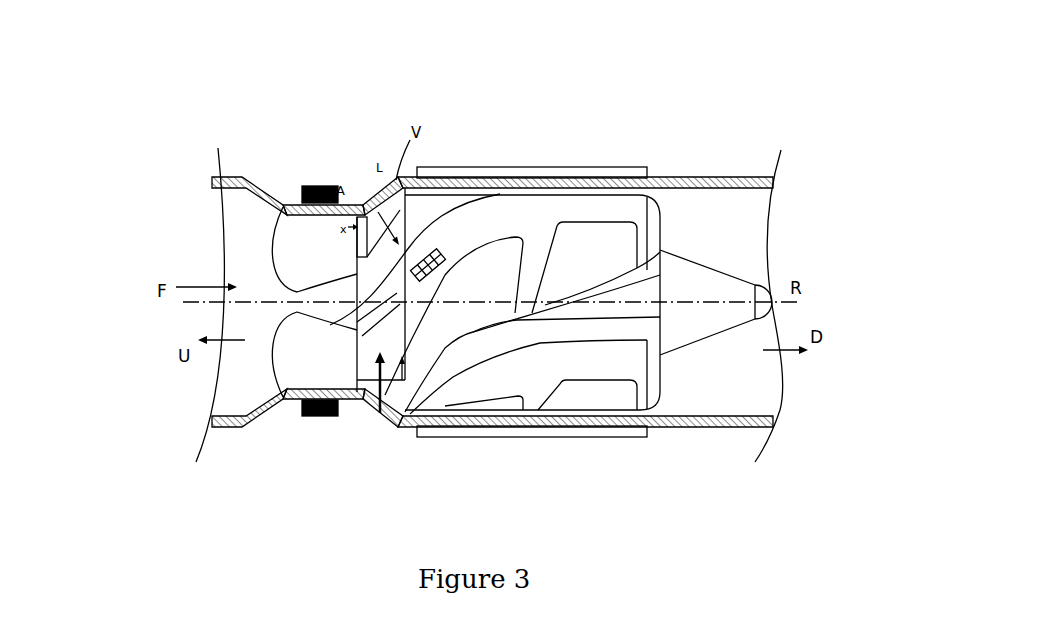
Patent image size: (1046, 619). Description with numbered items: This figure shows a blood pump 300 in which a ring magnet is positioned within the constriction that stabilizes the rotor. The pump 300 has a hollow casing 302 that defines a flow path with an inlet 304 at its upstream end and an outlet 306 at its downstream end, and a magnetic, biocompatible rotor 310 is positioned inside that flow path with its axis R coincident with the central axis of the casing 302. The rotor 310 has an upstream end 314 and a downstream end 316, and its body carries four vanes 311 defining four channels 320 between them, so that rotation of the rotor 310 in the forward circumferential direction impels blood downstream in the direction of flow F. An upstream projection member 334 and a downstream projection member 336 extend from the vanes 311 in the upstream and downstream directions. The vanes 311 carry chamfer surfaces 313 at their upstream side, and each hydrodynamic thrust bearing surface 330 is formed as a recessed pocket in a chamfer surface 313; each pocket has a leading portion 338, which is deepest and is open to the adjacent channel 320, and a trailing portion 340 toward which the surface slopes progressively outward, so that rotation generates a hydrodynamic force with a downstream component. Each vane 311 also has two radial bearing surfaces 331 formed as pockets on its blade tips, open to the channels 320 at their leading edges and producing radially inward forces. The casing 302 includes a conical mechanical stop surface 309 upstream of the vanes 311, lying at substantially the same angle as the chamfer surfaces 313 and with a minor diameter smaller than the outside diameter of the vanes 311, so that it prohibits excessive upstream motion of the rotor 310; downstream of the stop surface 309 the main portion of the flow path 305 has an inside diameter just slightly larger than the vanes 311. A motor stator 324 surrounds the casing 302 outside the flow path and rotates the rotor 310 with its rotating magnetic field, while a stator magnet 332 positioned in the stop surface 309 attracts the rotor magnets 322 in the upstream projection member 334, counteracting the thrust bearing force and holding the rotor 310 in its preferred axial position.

The pump 300 is at (546, 113).
The hollow casing 302 is at (705, 194).
The inlet 304 is at (200, 210).
The main portion of the flow path 305 is at (760, 253).
The outlet 306 is at (784, 188).
The mechanical stop surface 309 is at (363, 412).
The rotor 310 is at (604, 218).
The vanes 311 is at (494, 224).
The chamfer surfaces 313 is at (385, 416).
The upstream end 314 is at (413, 420).
The downstream end 316 is at (662, 206).
The channels 320 is at (460, 360).
The rotor magnets 322 is at (438, 277).
The motor stator 324 is at (592, 167).
The hydrodynamic thrust bearing surface 330 is at (373, 420).
The radial bearing surfaces 331 is at (503, 267).
The stator magnet 332 is at (337, 185).
The upstream projection member 334 is at (283, 201).
The downstream projection member 336 is at (697, 328).
The leading portion 338 is at (347, 399).
The trailing portion 340 is at (300, 394).